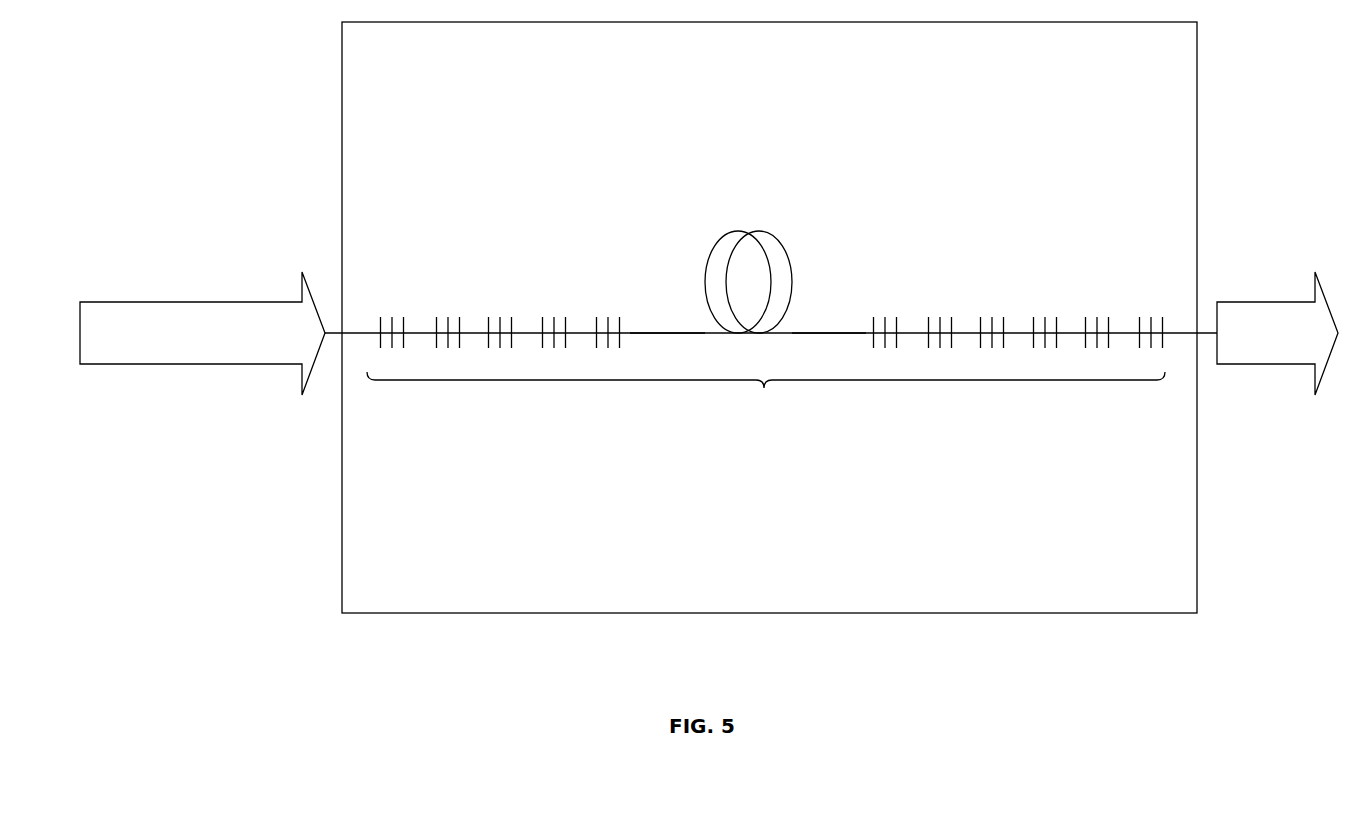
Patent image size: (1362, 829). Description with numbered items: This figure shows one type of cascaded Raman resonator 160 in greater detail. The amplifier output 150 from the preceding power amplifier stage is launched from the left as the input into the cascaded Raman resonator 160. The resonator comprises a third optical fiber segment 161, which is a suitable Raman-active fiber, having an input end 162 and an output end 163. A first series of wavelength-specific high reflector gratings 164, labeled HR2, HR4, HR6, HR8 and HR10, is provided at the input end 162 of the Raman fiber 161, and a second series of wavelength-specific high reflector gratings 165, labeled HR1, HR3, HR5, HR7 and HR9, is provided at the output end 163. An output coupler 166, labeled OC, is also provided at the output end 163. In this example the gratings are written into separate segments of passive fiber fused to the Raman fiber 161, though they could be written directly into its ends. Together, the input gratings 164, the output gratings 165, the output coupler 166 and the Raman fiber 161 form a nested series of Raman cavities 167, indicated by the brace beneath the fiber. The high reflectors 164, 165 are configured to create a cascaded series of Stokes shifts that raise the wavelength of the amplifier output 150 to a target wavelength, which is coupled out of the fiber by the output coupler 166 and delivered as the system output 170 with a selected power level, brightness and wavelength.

The amplifier output 150 is at (179, 278).
The cascaded Raman resonator 160 is at (858, 50).
The third optical fiber segment 161 is at (731, 216).
The input end 162 is at (661, 323).
The output end 163 is at (801, 323).
The first series of wavelength-specific high reflector gratings 164 is at (625, 280).
The second series of wavelength-specific high reflector gratings 165 is at (1115, 280).
The output coupler 166 is at (1132, 285).
The nested series of Raman cavities 167 is at (746, 476).
The system output 170 is at (1249, 276).